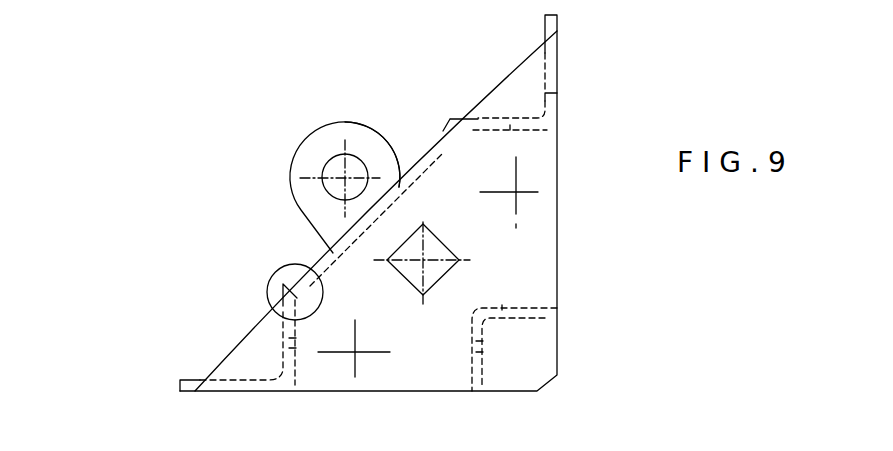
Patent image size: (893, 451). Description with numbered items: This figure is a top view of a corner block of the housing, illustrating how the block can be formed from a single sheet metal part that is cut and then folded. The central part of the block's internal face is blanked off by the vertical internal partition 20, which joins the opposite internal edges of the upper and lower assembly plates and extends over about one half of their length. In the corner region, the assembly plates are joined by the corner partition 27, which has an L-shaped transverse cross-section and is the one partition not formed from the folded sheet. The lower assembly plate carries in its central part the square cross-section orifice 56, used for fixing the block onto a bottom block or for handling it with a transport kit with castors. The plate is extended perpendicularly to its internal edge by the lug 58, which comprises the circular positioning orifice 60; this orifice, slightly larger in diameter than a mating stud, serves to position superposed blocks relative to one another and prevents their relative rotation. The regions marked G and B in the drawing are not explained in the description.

The internal partition 20 is at (432, 148).
The corner partition 27 is at (525, 315).
The square cross-section orifice 56 is at (432, 270).
The lug 58 is at (366, 145).
The circular positioning orifice 60 is at (337, 177).
The gusset G is at (298, 120).
The bend detail B is at (268, 291).